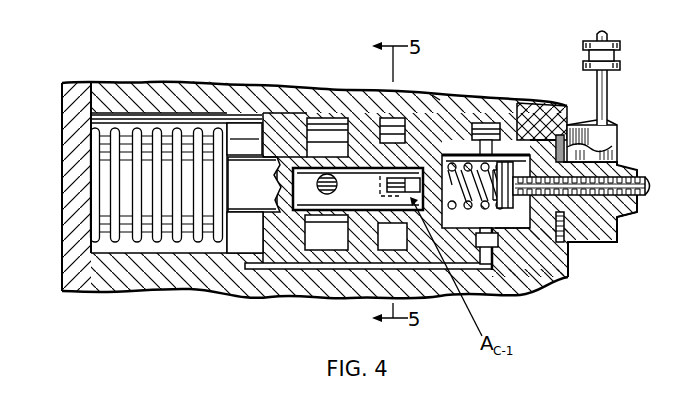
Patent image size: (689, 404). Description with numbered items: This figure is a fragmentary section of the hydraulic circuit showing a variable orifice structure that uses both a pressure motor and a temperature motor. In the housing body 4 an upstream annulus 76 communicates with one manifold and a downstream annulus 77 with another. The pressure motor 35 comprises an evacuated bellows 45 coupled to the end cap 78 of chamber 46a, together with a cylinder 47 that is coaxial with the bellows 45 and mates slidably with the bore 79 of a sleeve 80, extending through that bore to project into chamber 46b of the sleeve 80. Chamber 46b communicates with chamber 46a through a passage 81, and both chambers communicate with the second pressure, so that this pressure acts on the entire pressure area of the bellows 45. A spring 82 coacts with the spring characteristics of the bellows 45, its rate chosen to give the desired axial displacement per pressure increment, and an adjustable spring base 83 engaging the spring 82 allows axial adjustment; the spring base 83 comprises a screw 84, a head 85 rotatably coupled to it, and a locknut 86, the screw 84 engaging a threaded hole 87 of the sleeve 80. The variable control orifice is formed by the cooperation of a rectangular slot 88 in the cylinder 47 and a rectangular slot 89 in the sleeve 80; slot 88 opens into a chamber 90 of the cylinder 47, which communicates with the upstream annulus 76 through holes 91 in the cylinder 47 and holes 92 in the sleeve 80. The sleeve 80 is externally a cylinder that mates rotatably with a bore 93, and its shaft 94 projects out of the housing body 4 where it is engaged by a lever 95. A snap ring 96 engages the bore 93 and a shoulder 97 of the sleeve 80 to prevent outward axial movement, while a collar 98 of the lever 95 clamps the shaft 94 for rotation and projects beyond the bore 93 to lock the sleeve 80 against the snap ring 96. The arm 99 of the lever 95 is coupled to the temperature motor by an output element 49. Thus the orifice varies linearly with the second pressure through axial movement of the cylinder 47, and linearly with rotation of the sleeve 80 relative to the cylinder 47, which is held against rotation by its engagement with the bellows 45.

The housing body 4 is at (433, 96).
The pressure motor 35 is at (189, 76).
The evacuated bellows 45 is at (156, 132).
The chamber 46a is at (241, 138).
The chamber 46b is at (512, 108).
The cylinder 47 is at (259, 194).
The output element 49 is at (620, 49).
The upstream annulus 76 is at (318, 136).
The downstream annulus 77 is at (424, 96).
The end cap 78 is at (62, 160).
The bore 79 is at (484, 142).
The sleeve 80 is at (278, 136).
The passage 81 is at (484, 298).
The spring 82 is at (512, 294).
The adjustable spring base 83 is at (557, 134).
The screw 84 is at (646, 174).
The head 85 is at (566, 276).
The locknut 86 is at (627, 164).
The threaded hole 87 is at (598, 241).
The rectangular slot 88 is at (444, 104).
The rectangular slot 89 is at (370, 222).
The chamber 90 is at (357, 186).
The holes 91 is at (262, 268).
The holes 92 is at (330, 145).
The bore 93 is at (232, 272).
The shaft 94 is at (620, 147).
The lever 95 is at (614, 132).
The snap ring 96 is at (580, 122).
The shoulder 97 is at (563, 244).
The collar 98 is at (615, 229).
The arm 99 is at (600, 34).